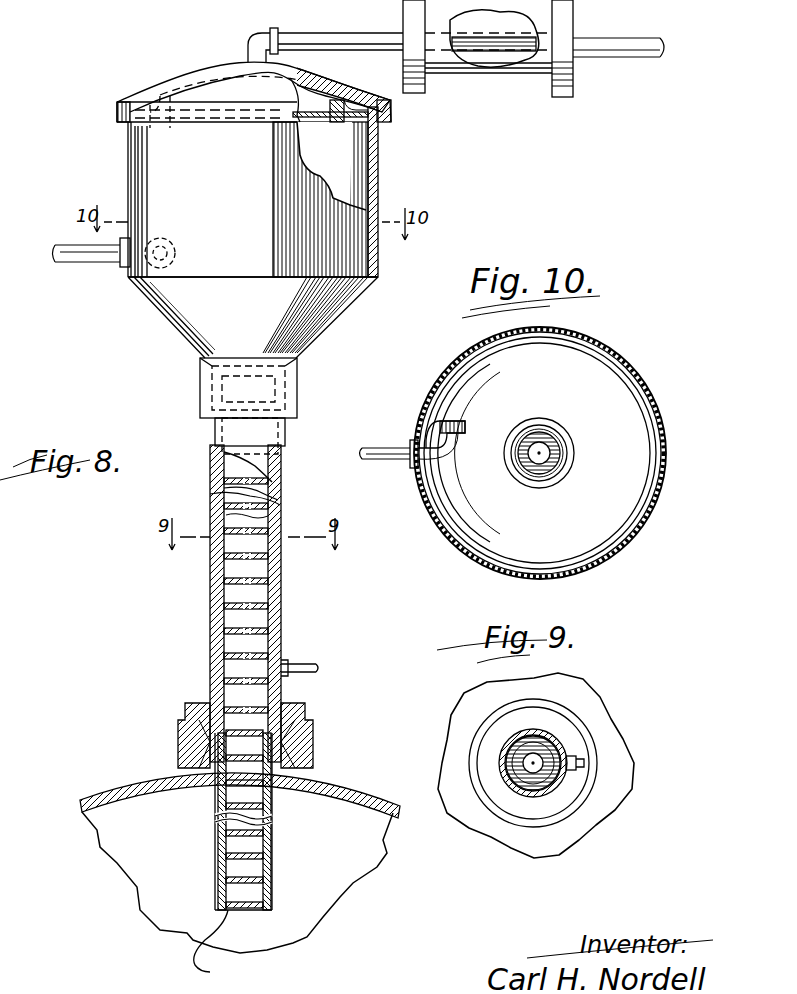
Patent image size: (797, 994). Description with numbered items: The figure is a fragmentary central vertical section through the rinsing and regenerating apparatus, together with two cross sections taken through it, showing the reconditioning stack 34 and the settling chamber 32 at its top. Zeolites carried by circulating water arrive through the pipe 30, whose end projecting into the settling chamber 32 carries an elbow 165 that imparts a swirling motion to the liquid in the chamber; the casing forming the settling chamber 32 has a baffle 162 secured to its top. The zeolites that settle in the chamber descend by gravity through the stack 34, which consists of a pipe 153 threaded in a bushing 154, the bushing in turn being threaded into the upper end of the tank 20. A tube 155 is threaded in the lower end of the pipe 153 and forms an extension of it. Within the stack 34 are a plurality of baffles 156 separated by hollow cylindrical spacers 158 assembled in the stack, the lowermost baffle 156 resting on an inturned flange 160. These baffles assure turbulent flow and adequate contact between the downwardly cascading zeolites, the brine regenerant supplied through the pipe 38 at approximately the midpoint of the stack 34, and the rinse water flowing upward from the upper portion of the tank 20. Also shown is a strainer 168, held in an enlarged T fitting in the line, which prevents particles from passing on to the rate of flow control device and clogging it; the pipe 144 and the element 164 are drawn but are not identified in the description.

In FIG. 8, the tank 20 is at (165, 790).
In FIG. 9, the tank 20 is at (590, 732).
In FIG. 8, the pipe 30 is at (100, 262).
In FIG. 10, the pipe 30 is at (384, 462).
In FIG. 8, the settling chamber 32 is at (372, 180).
In FIG. 10, the settling chamber 32 is at (645, 462).
In FIG. 8, the reconditioning stack 34 is at (202, 461).
In FIG. 8, the pipe 38 is at (300, 666).
In FIG. 8, the top pipe 144 is at (368, 40).
In FIG. 8, the pipe 153 is at (212, 455).
In FIG. 10, the pipe 153 is at (540, 488).
In FIG. 9, the pipe 153 is at (566, 752).
In FIG. 8, the bushing 154 is at (194, 704).
In FIG. 8, the tube 155 is at (272, 838).
In FIG. 8, the baffles 156 is at (280, 486).
In FIG. 10, the baffles 156 is at (556, 455).
In FIG. 9, the baffles 156 is at (570, 775).
In FIG. 8, the hollow cylindrical spacers 158 is at (222, 478).
In FIG. 10, the hollow cylindrical spacers 158 is at (558, 468).
In FIG. 9, the hollow cylindrical spacers 158 is at (533, 790).
In FIG. 8, the inturned flange 160 is at (218, 948).
In FIG. 8, the baffle 162 is at (312, 122).
In FIG. 8, the packing 164 is at (390, 124).
In FIG. 10, the elbow 165 is at (458, 428).
In FIG. 8, the strainer 168 is at (500, 62).